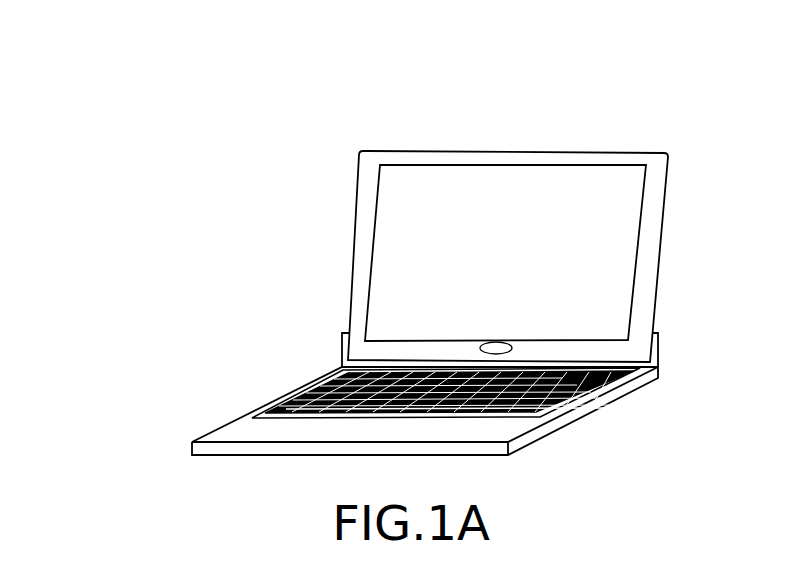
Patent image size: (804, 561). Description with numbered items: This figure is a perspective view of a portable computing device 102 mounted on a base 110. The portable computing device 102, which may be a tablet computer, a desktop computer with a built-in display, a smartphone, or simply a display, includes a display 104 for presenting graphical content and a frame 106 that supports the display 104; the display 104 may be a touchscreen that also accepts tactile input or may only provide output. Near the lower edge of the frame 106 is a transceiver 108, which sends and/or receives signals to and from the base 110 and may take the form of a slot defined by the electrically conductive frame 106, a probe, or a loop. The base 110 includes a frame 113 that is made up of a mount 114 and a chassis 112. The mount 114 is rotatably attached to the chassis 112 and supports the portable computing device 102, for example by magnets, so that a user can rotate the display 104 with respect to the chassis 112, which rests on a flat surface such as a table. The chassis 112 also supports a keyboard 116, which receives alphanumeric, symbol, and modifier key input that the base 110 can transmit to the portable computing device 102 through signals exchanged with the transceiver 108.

The portable computing device 102 is at (481, 100).
The display 104 is at (491, 266).
The frame 106 is at (358, 250).
The transceiver 108 is at (509, 343).
The base 110 is at (146, 443).
The chassis 112 is at (237, 417).
The frame 113 is at (280, 395).
The mount 114 is at (340, 353).
The keyboard 116 is at (583, 395).